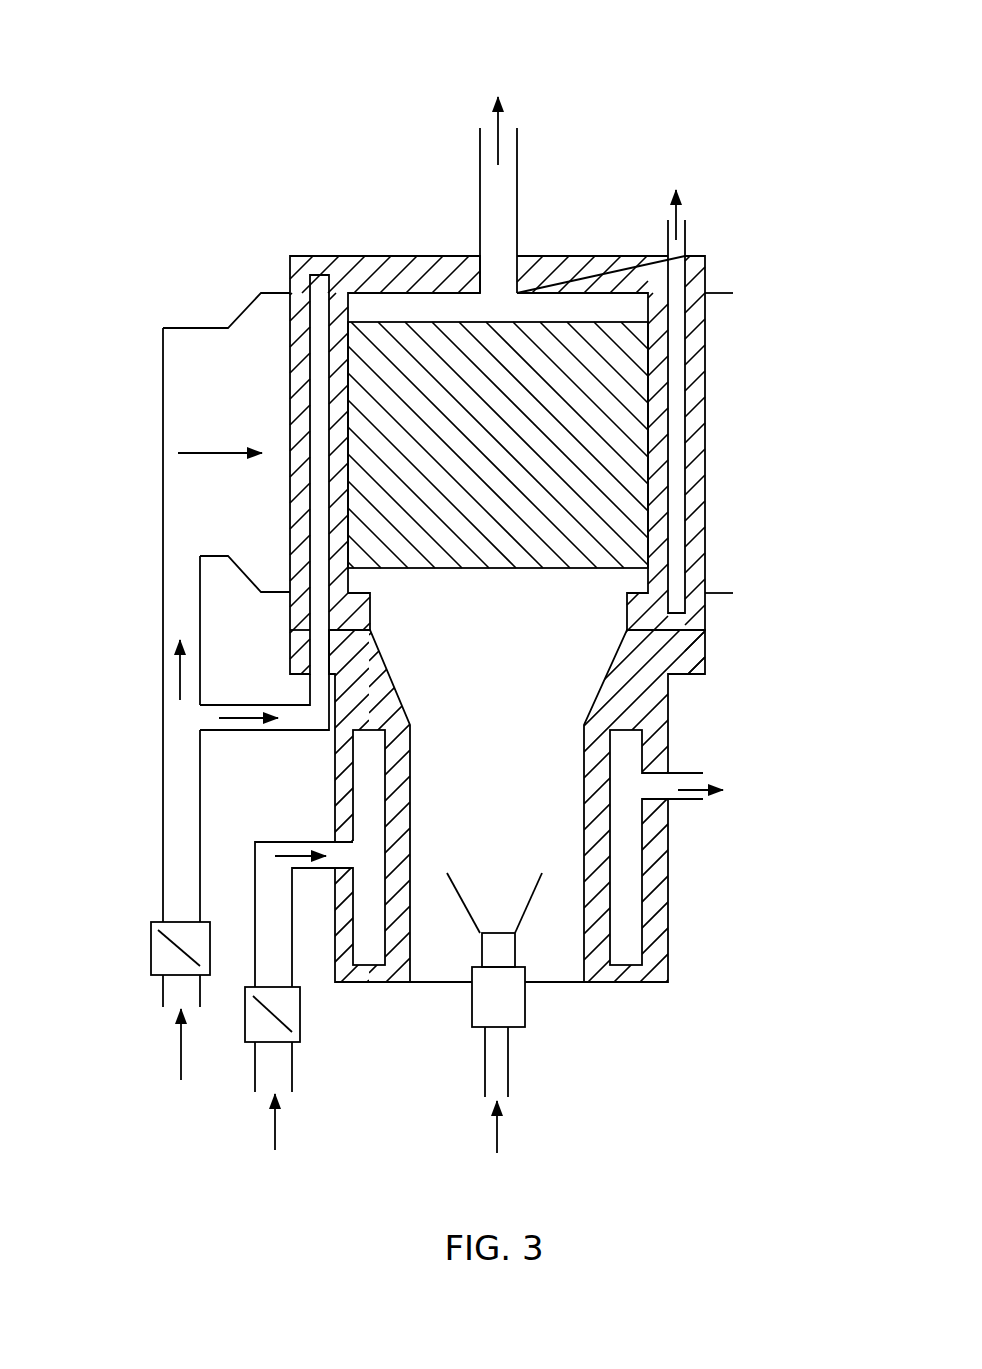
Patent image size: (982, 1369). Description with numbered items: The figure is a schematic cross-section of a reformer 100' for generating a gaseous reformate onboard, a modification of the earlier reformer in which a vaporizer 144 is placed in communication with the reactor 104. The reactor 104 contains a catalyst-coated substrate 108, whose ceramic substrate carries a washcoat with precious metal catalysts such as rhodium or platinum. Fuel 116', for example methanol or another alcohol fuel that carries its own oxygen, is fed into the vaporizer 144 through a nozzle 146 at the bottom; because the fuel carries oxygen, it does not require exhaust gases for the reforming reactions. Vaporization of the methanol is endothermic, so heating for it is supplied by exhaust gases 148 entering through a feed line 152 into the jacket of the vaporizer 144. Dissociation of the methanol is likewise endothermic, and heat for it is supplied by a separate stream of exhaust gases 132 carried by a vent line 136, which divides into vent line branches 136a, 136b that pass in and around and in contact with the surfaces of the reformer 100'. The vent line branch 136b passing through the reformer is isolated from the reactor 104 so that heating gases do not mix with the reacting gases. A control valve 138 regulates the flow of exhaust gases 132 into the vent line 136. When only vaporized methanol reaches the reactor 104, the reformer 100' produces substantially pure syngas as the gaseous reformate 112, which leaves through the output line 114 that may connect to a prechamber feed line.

The reformer 100' is at (434, 596).
The reactor 104 is at (648, 447).
The catalyst-coated substrate 108 is at (632, 528).
The gaseous reformate 112 is at (500, 115).
The output line 114 is at (479, 212).
The fuel 116' is at (500, 1105).
The exhaust gases 132 is at (180, 1067).
The vent line 136 is at (162, 803).
The vent line branch 136a is at (174, 465).
The vent line branch 136b is at (306, 722).
The control valve 138 is at (150, 950).
The vaporizer 144 is at (662, 875).
The nozzle 146 is at (512, 997).
The exhaust gases 148 is at (272, 1085).
The feed line 152 is at (262, 852).